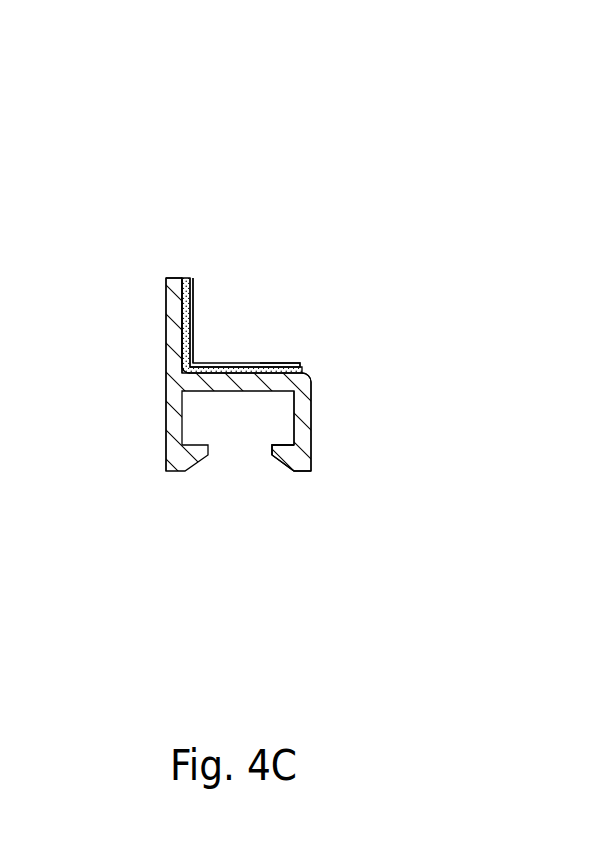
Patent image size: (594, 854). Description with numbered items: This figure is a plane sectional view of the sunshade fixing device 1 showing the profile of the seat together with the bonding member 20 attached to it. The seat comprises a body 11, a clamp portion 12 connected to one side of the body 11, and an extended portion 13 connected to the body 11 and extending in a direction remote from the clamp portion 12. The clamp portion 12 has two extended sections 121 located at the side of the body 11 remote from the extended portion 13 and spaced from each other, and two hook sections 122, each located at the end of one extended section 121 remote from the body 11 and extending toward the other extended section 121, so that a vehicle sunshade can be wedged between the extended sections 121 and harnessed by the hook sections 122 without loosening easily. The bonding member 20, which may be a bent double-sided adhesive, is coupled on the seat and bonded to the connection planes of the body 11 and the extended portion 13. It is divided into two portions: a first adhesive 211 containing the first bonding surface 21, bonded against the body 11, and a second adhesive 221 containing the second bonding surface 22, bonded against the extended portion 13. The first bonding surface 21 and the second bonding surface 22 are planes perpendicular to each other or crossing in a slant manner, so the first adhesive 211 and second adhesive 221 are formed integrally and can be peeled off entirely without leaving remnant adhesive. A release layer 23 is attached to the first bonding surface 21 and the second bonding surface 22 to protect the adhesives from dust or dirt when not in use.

The frame assembly 1 is at (421, 135).
The body 11 is at (218, 383).
The clamp portion 12 is at (319, 422).
The extended section 121 is at (303, 465).
The hook section 122 is at (272, 455).
The extended portion 13 is at (177, 303).
The bonding member 20 is at (313, 285).
The first bonding surface 21 is at (297, 365).
The first adhesive 211 is at (300, 371).
The second bonding surface 22 is at (190, 347).
The second adhesive 221 is at (185, 325).
The release layer 23 is at (192, 300).